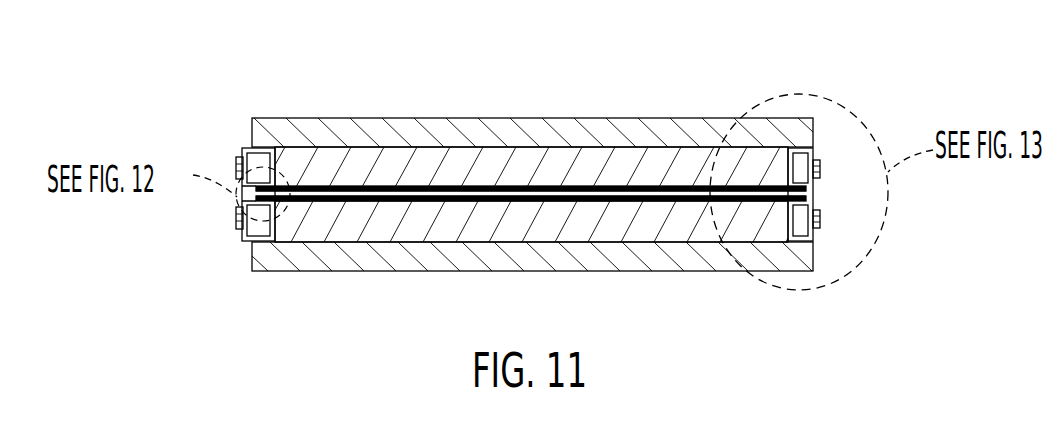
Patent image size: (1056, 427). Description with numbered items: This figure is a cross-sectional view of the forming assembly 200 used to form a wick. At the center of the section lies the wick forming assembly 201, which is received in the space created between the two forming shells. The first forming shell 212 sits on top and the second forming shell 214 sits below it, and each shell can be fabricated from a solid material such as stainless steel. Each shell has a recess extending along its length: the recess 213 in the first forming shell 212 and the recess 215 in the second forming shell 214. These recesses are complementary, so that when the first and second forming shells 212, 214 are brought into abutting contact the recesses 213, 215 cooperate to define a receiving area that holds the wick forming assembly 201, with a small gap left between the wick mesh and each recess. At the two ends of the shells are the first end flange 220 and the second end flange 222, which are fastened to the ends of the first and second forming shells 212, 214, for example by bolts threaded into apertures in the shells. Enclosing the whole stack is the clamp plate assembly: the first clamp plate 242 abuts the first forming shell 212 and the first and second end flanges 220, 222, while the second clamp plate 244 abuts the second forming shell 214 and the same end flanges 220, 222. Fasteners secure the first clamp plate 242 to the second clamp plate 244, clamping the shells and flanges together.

The forming assembly 200 is at (275, 66).
The wick forming assembly 201 is at (387, 185).
The first forming shell 212 is at (618, 165).
The recess of the first forming shell 213 is at (413, 186).
The second forming shell 214 is at (610, 225).
The recess of the second forming shell 215 is at (413, 202).
The first end flange 220 is at (262, 162).
The second end flange 222 is at (802, 217).
The first clamp plate 242 is at (252, 120).
The second clamp plate 244 is at (252, 264).